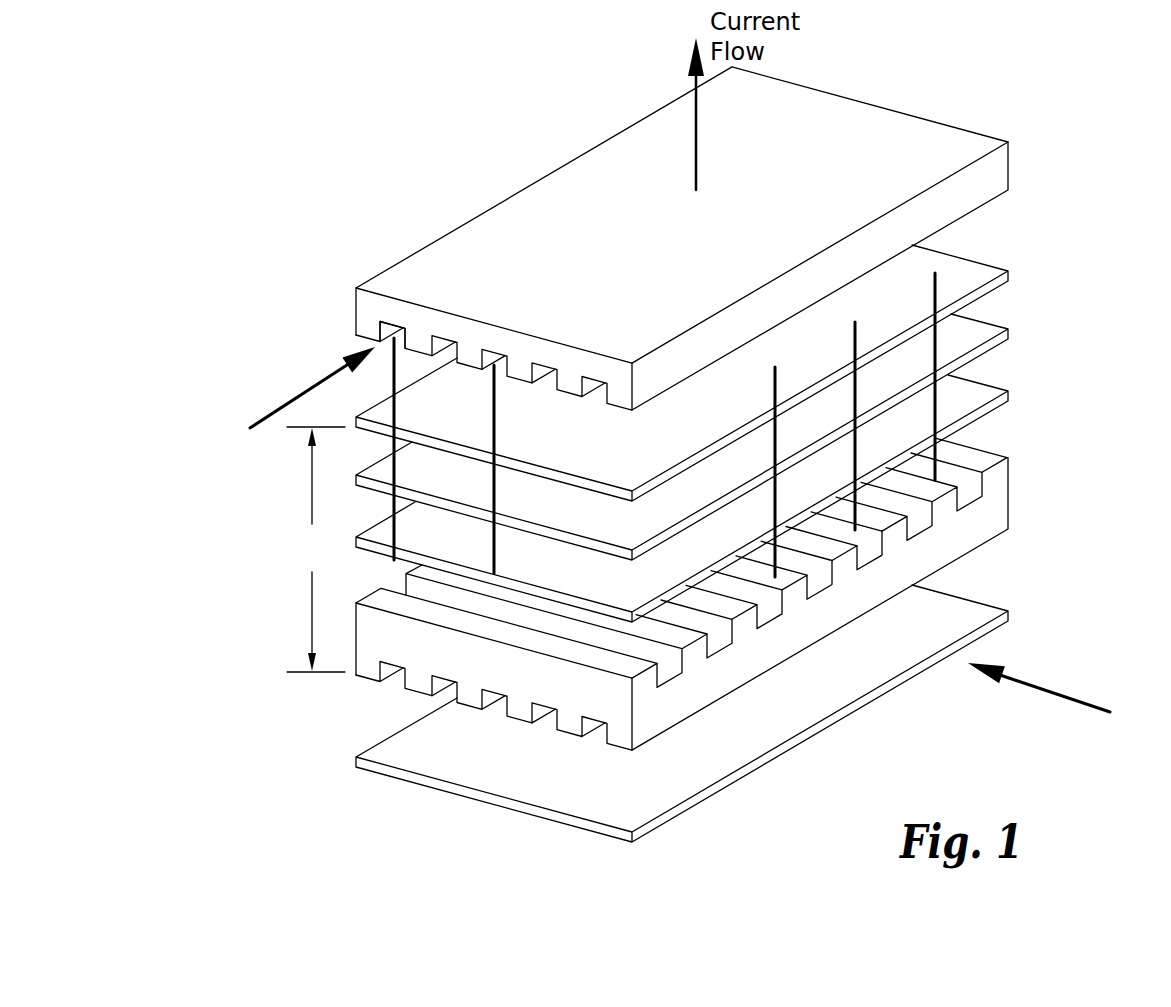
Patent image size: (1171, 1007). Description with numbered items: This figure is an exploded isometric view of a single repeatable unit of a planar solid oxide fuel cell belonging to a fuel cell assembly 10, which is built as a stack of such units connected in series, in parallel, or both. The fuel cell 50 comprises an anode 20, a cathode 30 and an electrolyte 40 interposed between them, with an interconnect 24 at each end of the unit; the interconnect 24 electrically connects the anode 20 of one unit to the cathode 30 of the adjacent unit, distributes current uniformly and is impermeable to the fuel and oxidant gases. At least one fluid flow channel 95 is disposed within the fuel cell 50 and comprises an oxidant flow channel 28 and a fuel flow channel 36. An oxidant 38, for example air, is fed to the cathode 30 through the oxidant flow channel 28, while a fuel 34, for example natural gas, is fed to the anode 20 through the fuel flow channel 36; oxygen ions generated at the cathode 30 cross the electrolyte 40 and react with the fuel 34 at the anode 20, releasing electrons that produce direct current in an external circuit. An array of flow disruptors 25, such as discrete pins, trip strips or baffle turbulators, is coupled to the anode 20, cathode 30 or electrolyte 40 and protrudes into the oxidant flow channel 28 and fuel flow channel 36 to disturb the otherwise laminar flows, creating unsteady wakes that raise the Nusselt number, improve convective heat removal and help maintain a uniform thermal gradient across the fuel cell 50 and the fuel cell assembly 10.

The fuel cell assembly 10 is at (348, 136).
The anode 20 is at (1008, 275).
The interconnect 24 is at (1008, 163).
The flow disruptors 25 is at (937, 347).
The oxidant flow channel 28 is at (378, 320).
The cathode 30 is at (1003, 408).
The fuel 34 is at (300, 387).
The fuel flow channel 36 is at (730, 647).
The oxidant 38 is at (1053, 687).
The electrolyte 40 is at (1008, 328).
The fuel cell 50 is at (316, 549).
The fluid flow channel 95 is at (922, 517).